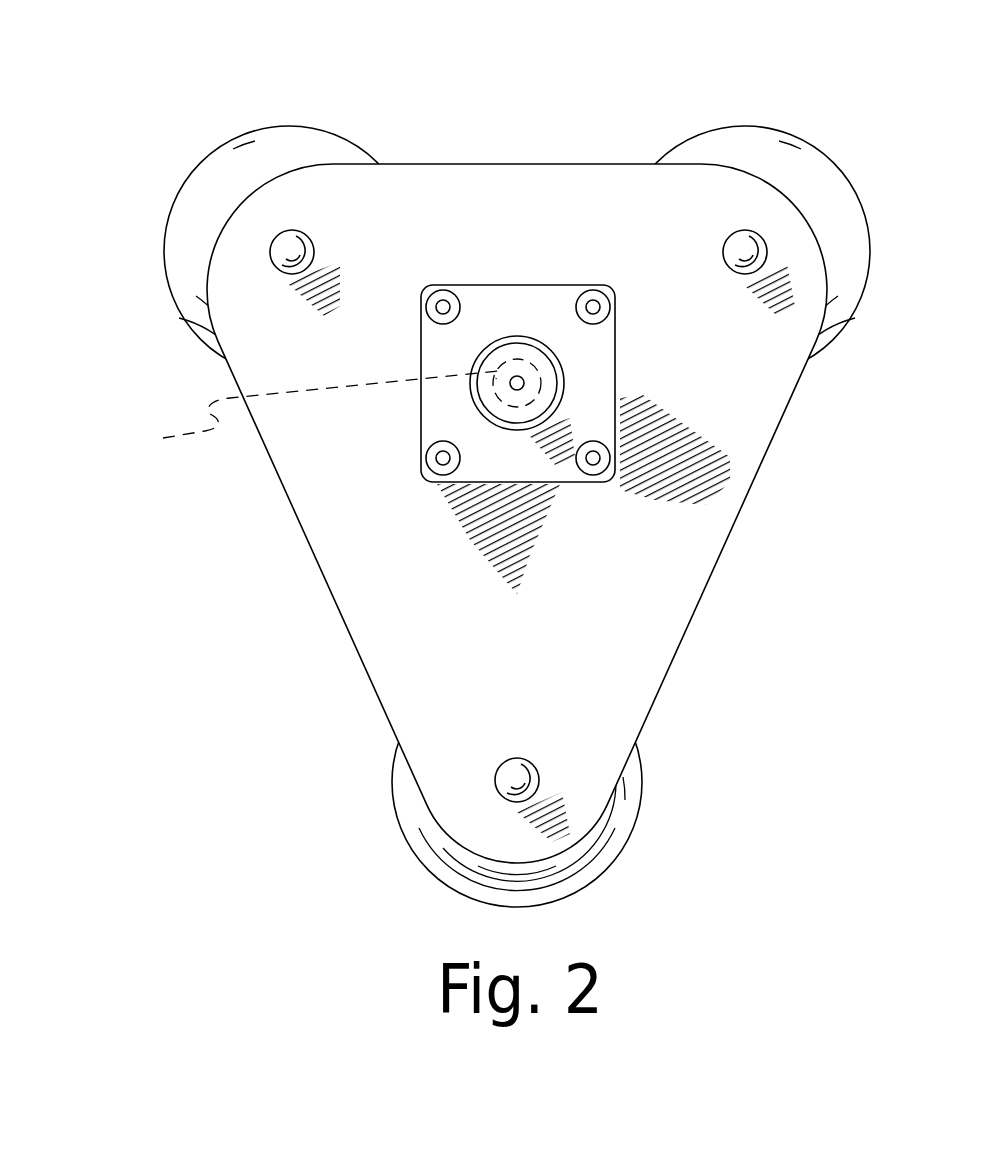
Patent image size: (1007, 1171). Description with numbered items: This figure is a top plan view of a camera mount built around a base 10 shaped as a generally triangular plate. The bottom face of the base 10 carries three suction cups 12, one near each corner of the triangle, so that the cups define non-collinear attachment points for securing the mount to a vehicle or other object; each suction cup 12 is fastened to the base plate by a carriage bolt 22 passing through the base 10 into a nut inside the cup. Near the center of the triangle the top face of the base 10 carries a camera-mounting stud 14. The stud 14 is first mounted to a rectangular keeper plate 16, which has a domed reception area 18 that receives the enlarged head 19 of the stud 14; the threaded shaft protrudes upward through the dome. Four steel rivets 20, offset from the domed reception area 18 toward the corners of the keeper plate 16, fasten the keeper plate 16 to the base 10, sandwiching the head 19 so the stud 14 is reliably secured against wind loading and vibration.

The base 10 is at (383, 633).
The suction cups 12 is at (233, 170).
The camera-mounting stud 14 is at (517, 385).
The keeper plate 16 is at (600, 357).
The domed reception area 18 is at (518, 348).
The enlarged head 19 is at (308, 415).
The rivets 20 is at (440, 297).
The carriage bolt 22 is at (270, 263).